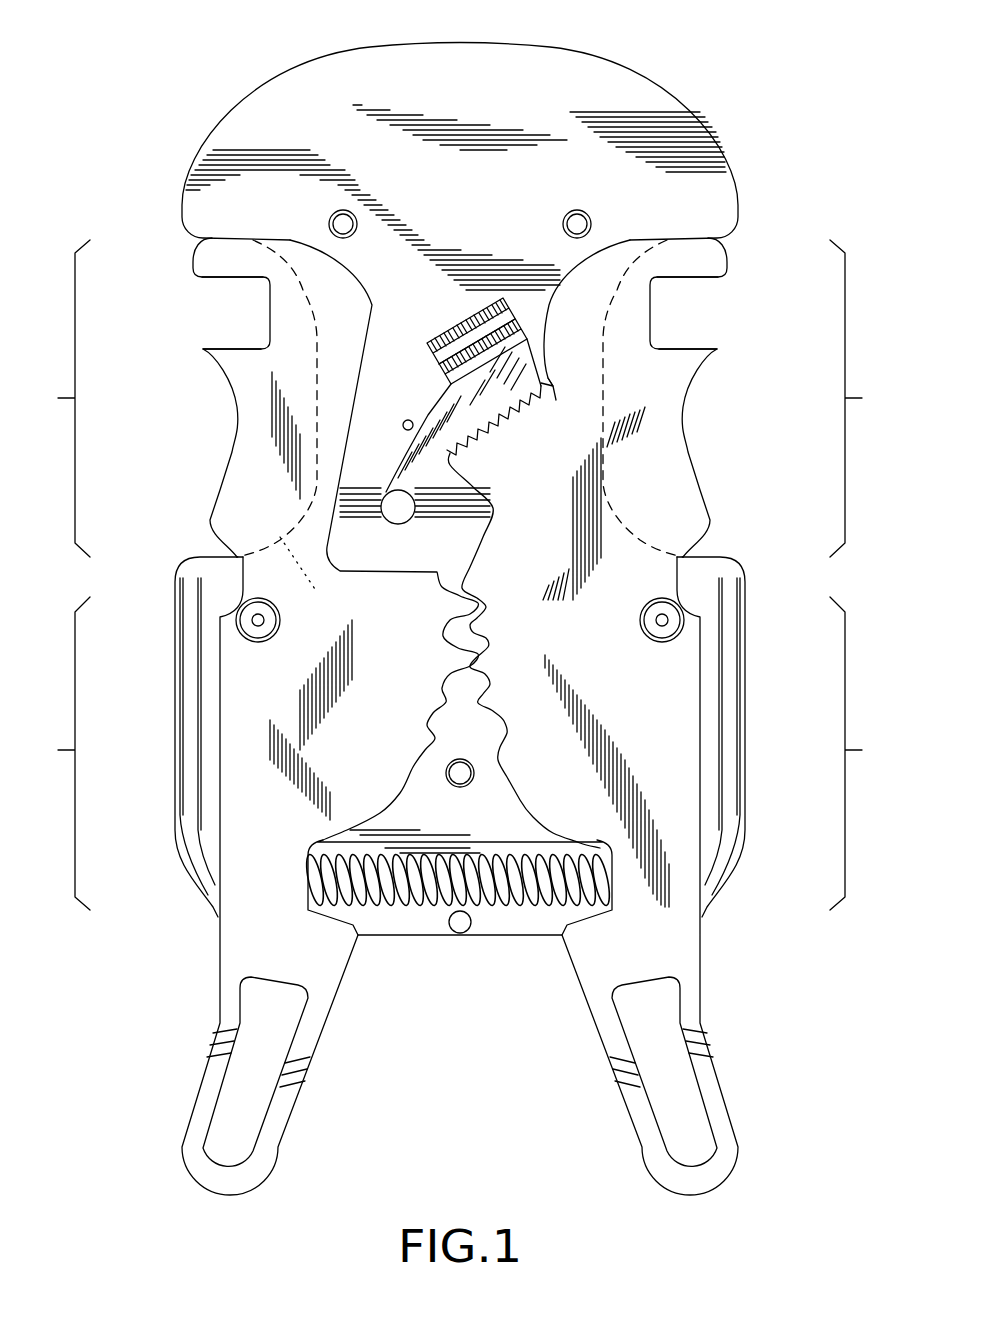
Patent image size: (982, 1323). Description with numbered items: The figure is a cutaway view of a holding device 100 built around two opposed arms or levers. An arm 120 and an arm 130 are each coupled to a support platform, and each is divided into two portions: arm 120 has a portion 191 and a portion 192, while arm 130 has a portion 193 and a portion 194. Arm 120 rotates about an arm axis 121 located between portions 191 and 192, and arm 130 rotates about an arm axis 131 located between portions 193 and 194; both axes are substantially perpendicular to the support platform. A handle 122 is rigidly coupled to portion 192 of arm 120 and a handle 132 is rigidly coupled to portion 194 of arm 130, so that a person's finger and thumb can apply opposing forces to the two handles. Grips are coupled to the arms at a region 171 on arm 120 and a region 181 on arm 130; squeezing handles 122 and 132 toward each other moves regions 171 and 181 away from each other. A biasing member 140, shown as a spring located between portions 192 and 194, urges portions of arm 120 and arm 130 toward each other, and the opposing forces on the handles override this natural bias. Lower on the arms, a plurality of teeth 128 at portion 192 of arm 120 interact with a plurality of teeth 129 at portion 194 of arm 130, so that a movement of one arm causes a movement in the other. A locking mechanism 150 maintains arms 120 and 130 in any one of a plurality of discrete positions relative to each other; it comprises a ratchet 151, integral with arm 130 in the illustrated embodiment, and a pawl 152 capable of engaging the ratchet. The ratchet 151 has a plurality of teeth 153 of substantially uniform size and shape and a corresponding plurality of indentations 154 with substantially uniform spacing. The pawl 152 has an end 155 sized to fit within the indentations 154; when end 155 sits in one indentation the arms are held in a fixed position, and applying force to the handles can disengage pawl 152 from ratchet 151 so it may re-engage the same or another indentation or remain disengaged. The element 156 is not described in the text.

The holding device 100 is at (180, 87).
The arm 120 is at (237, 410).
The arm 130 is at (683, 410).
The arm axis 121 is at (258, 620).
The arm axis 131 is at (662, 620).
The handle 122 is at (211, 1051).
The handle 132 is at (707, 1051).
The plurality of teeth 128 is at (448, 740).
The plurality of teeth 129 is at (487, 748).
The biasing member 140 is at (440, 905).
The locking mechanism 150 is at (464, 392).
The ratchet 151 is at (465, 487).
The pawl 152 is at (440, 341).
The teeth 153 is at (412, 440).
The indentations 154 is at (548, 390).
The end 155 is at (550, 376).
The ratchet head band 156 is at (455, 370).
The region 171 is at (190, 308).
The region 181 is at (730, 308).
The portion 191 is at (56, 398).
The portion 192 is at (56, 753).
The portion 193 is at (863, 398).
The portion 194 is at (863, 753).